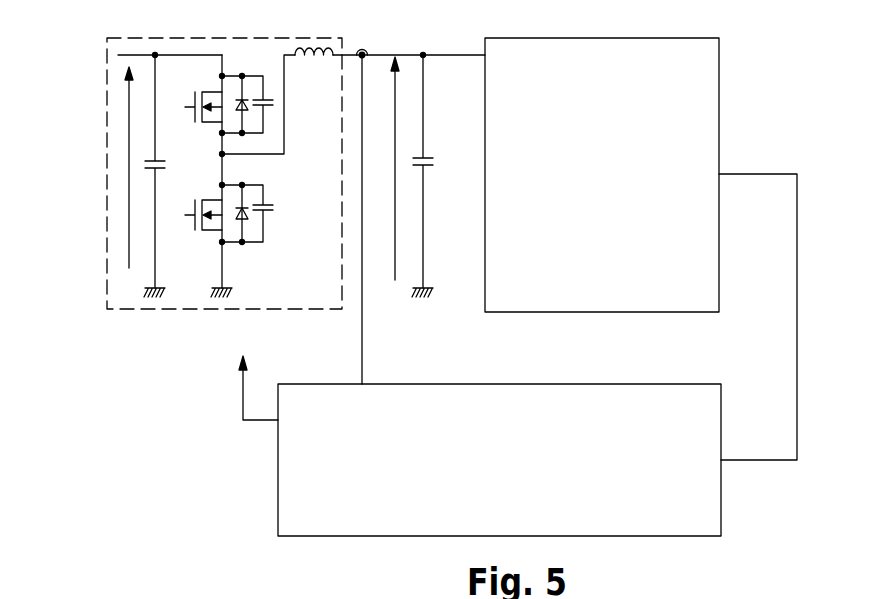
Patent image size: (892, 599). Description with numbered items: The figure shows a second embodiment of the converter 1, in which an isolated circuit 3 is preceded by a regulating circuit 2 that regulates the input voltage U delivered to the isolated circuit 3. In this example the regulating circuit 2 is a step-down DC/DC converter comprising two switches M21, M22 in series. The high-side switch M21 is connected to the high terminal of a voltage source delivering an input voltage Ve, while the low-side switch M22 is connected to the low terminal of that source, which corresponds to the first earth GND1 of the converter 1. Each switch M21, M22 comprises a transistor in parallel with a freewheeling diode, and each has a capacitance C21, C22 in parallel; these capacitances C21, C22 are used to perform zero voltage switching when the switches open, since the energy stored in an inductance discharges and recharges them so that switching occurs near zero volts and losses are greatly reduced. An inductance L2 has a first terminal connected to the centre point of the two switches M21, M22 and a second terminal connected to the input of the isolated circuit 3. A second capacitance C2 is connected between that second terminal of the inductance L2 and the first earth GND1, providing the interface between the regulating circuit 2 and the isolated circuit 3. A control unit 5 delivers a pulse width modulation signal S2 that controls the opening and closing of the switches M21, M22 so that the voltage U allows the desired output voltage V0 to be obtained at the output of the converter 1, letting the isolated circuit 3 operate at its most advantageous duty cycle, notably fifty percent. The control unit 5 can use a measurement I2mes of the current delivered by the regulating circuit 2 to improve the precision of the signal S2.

The converter 1 is at (92, 69).
The regulating circuit 2 is at (106, 189).
The isolated circuit 3 is at (602, 175).
The control unit 5 is at (278, 463).
The input voltage Ve is at (128, 140).
The high-side switch M21 is at (186, 110).
The low-side switch M22 is at (183, 223).
The capacitance C21 is at (266, 96).
The capacitance C22 is at (268, 212).
The first earth GND1 is at (157, 300).
The inductance L2 is at (306, 61).
The current measurement I2mes is at (391, 217).
The input voltage U is at (393, 140).
The second capacitance C2 is at (430, 167).
The output voltage V0 is at (758, 299).
The pulse width modulation signal S2 is at (254, 374).